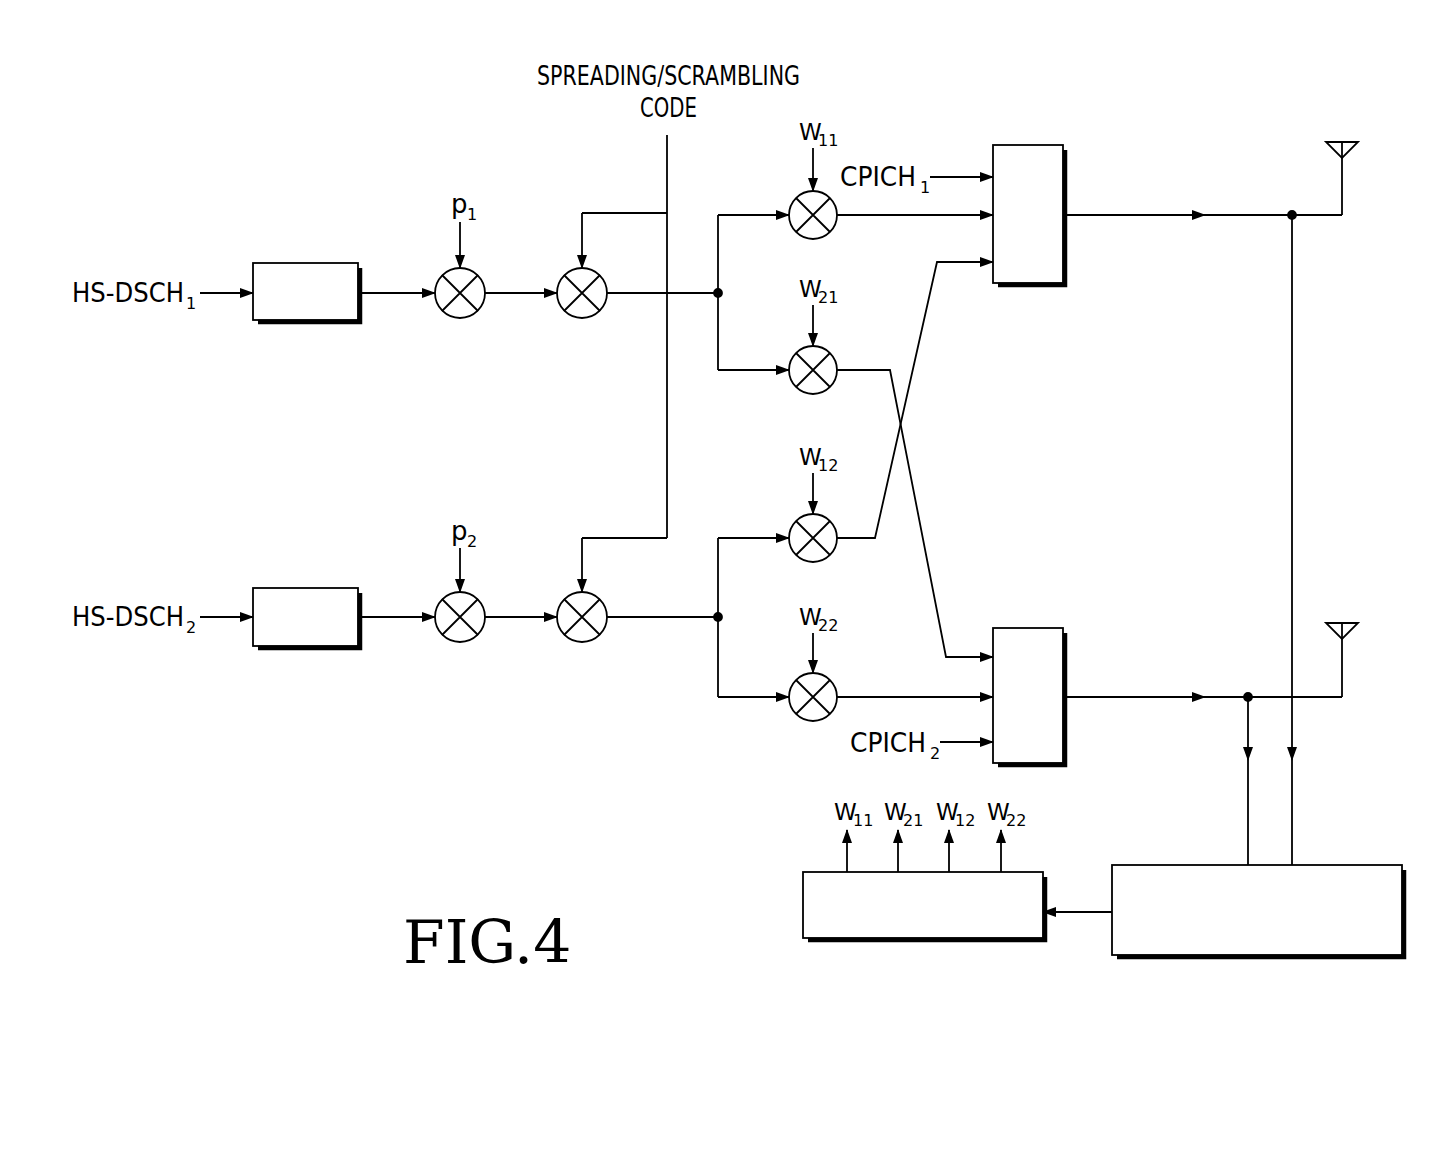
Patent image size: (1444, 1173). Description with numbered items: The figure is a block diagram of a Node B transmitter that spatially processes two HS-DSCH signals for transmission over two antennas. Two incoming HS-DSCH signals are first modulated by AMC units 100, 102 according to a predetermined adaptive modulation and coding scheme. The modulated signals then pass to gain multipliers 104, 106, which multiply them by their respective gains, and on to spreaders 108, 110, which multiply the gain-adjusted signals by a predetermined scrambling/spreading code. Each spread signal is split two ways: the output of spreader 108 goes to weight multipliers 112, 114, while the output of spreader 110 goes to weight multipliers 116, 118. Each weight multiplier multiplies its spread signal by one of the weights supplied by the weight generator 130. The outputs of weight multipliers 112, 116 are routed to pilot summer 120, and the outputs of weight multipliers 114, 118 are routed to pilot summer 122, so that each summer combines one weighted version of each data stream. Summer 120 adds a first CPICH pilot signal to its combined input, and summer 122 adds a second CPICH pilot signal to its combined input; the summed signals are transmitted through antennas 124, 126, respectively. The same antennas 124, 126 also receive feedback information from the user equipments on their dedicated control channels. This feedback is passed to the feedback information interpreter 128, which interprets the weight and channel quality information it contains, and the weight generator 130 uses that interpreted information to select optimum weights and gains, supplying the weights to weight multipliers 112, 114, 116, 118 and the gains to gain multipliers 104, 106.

The AMC unit 100 is at (313, 263).
The AMC unit 102 is at (313, 588).
The gain multiplier 104 is at (479, 276).
The gain multiplier 106 is at (479, 600).
The spreader 108 is at (601, 276).
The spreader 110 is at (601, 600).
The weight multiplier 112 is at (795, 200).
The weight multiplier 114 is at (795, 355).
The weight multiplier 116 is at (795, 523).
The weight multiplier 118 is at (795, 685).
The pilot summer 120 is at (1030, 145).
The pilot summer 122 is at (1028, 628).
The antenna 124 is at (1345, 141).
The antenna 126 is at (1345, 622).
The feedback information interpreter 128 is at (1363, 960).
The weight generator 130 is at (990, 940).